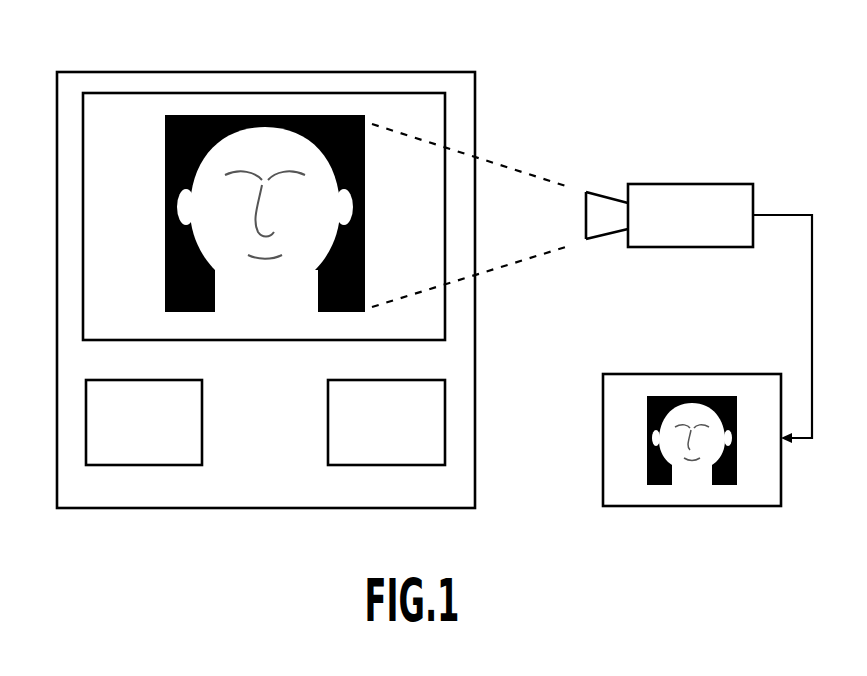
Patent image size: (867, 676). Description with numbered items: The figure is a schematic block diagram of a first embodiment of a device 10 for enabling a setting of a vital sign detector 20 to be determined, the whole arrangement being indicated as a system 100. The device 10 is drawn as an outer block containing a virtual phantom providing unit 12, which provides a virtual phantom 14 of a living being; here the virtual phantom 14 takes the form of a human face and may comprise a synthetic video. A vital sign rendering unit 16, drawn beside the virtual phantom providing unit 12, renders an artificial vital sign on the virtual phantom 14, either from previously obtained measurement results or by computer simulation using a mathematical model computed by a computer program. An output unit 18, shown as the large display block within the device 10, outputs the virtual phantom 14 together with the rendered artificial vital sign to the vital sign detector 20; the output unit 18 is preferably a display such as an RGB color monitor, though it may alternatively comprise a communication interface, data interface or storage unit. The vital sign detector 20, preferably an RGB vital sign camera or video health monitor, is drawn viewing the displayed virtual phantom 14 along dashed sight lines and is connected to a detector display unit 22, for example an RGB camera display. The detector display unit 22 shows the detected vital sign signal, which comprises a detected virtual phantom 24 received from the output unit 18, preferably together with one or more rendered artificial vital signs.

The facial recognition system 100 is at (672, 98).
The device 10 is at (428, 72).
The output unit 18 is at (122, 93).
The virtual phantom 14 is at (263, 115).
The virtual phantom providing unit 12 is at (202, 423).
The vital sign rendering unit 16 is at (445, 423).
The vital sign detector 20 is at (688, 247).
The detector display unit 22 is at (692, 374).
The detected virtual phantom 24 is at (692, 485).